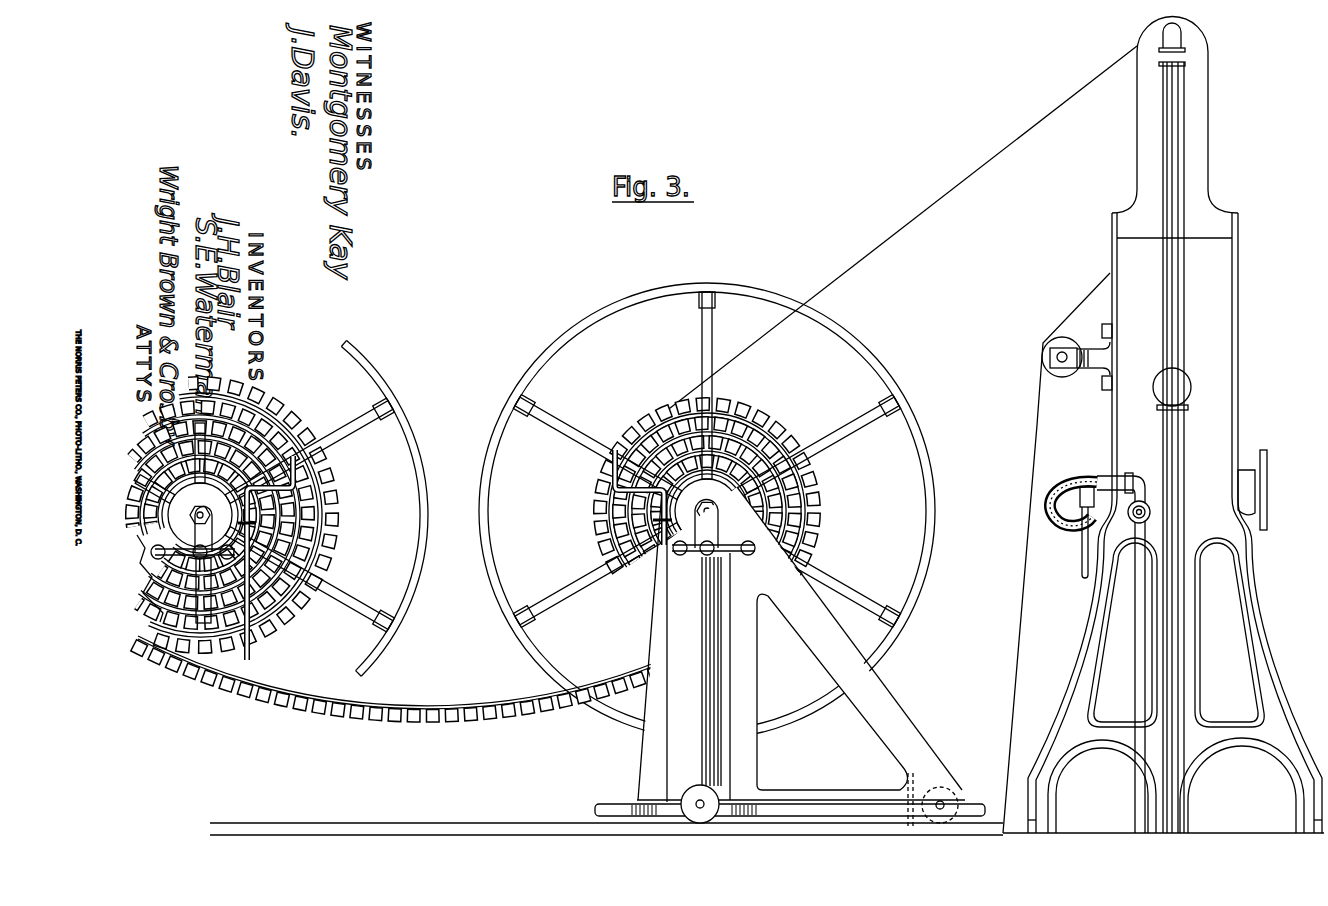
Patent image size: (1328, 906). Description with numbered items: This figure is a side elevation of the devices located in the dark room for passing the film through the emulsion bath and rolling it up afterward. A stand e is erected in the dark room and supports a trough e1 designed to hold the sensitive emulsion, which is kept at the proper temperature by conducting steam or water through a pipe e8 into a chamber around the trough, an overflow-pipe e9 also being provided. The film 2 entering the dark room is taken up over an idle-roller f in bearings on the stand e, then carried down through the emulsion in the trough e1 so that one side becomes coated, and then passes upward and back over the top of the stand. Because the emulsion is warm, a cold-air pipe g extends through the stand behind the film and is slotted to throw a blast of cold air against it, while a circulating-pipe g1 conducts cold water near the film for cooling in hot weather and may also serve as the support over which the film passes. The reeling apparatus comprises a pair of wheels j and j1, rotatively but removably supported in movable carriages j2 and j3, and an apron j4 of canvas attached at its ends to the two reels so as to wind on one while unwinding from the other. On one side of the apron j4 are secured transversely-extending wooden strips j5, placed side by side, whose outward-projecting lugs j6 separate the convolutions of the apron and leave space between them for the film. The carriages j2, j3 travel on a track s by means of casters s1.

The film 2 is at (882, 236).
The wheel j is at (707, 511).
The wheel j1 is at (281, 508).
The movable frame or carriage j2 is at (885, 716).
The movable frame or carriage j3 is at (453, 562).
The apron j4 is at (456, 702).
The transversely-extending wooden strips j5 is at (473, 515).
The outward-projecting lugs j6 is at (605, 530).
The track s is at (772, 822).
The casters s1 is at (693, 797).
The stand e is at (1163, 424).
The trough e1 is at (1240, 467).
The pipe e8 is at (1067, 477).
The overflow-pipe e9 is at (1078, 555).
The idle-roller f is at (1060, 373).
The cold-air pipe g is at (1187, 408).
The circulating-pipe g1 is at (1177, 88).